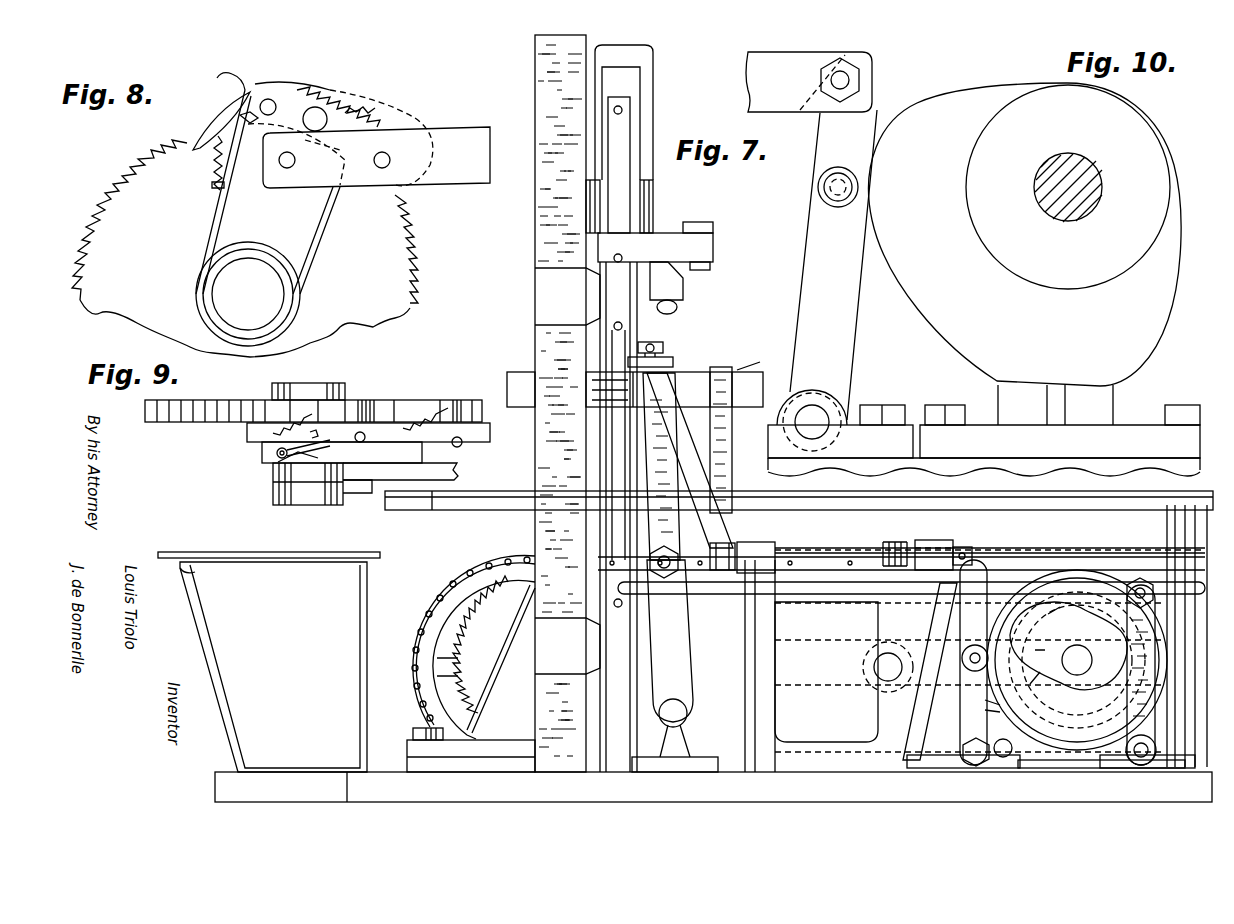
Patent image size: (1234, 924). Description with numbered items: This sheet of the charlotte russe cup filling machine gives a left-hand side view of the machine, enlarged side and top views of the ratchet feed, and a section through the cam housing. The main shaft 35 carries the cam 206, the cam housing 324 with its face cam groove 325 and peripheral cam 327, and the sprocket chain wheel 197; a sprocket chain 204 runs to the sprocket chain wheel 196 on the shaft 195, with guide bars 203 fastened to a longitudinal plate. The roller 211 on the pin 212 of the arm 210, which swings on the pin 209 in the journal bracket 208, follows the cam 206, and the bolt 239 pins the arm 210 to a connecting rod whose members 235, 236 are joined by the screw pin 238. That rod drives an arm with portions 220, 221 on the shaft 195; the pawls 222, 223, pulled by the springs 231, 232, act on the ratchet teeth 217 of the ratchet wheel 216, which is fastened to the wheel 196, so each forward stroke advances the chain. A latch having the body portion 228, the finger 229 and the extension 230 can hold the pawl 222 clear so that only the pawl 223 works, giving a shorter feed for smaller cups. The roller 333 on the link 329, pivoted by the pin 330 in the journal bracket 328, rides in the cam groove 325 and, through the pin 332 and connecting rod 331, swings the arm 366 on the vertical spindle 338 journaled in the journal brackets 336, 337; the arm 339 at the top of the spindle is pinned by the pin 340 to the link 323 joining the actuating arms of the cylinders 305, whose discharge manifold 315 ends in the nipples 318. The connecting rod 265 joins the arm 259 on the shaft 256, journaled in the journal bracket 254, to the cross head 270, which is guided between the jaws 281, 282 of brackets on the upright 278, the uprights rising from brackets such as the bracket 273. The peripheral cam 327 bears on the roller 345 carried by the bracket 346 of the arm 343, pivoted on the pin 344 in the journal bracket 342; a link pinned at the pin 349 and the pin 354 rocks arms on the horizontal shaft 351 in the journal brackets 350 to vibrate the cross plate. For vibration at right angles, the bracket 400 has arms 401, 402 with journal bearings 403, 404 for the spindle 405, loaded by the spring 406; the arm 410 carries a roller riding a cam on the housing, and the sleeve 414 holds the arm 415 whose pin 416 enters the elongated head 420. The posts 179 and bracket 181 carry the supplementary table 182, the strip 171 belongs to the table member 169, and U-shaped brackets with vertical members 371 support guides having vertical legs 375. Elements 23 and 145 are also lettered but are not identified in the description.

In FIG. 7, the carriage 23 is at (880, 610).
In FIG. 10, the main shaft 35 is at (1093, 200).
In FIG. 7, the main shaft 35 is at (1072, 654).
In FIG. 7, the upright 145 is at (1192, 650).
In FIG. 7, the table member 169 is at (432, 508).
In FIG. 7, the strip 171 is at (410, 505).
In FIG. 7, the post 179 is at (1192, 690).
In FIG. 7, the bracket 181 is at (208, 610).
In FIG. 7, the supplementary table 182 is at (256, 556).
In FIG. 8, the shaft 195 is at (248, 294).
In FIG. 9, the shaft 195 is at (325, 500).
In FIG. 7, the sprocket chain wheel 196 is at (480, 590).
In FIG. 7, the sprocket chain wheel 197 is at (1110, 572).
In FIG. 7, the guide bars 203 is at (1003, 760).
In FIG. 7, the sprocket chain 204 is at (472, 562).
In FIG. 10, the cam 206 is at (1025, 234).
In FIG. 7, the journal bracket 208 is at (852, 425).
In FIG. 7, the pin 209 is at (815, 420).
In FIG. 7, the arm 210 is at (848, 332).
In FIG. 7, the roller 211 is at (818, 188).
In FIG. 7, the pin 212 is at (824, 197).
In FIG. 8, the ratchet wheel 216 is at (378, 263).
In FIG. 9, the ratchet wheel 216 is at (192, 424).
In FIG. 7, the ratchet wheel 216 is at (460, 650).
In FIG. 8, the ratchet teeth 217 is at (140, 170).
In FIG. 8, the arm portion 220 is at (205, 232).
In FIG. 9, the arm portion 220 is at (287, 483).
In FIG. 8, the arm portion 221 is at (400, 172).
In FIG. 9, the arm portion 221 is at (472, 441).
In FIG. 8, the pawl 222 is at (215, 107).
In FIG. 9, the pawl 222 is at (340, 410).
In FIG. 8, the pawl 223 is at (395, 150).
In FIG. 9, the pawl 223 is at (415, 400).
In FIG. 8, the latch body portion 228 is at (218, 192).
In FIG. 9, the latch body portion 228 is at (276, 453).
In FIG. 7, the latch body portion 228 is at (501, 659).
In FIG. 8, the projecting finger 229 is at (232, 100).
In FIG. 9, the projecting finger 229 is at (322, 440).
In FIG. 8, the extension 230 is at (237, 68).
In FIG. 9, the extension 230 is at (298, 468).
In FIG. 8, the spring 231 is at (212, 160).
In FIG. 9, the spring 231 is at (270, 435).
In FIG. 8, the spring 232 is at (360, 120).
In FIG. 9, the spring 232 is at (436, 410).
In FIG. 8, the connecting rod member 235 is at (488, 125).
In FIG. 9, the connecting rod member 235 is at (445, 474).
In FIG. 7, the connecting rod member 235 is at (818, 612).
In FIG. 7, the connecting rod member 236 is at (748, 78).
In FIG. 7, the screw pin 238 is at (868, 610).
In FIG. 7, the bolt 239 is at (850, 80).
In FIG. 7, the journal bracket 254 is at (880, 726).
In FIG. 7, the shaft 256 is at (885, 672).
In FIG. 7, the lever arm 259 is at (803, 682).
In FIG. 7, the connecting rod 265 is at (625, 205).
In FIG. 7, the cross head 270 is at (620, 81).
In FIG. 7, the bracket 273 is at (576, 738).
In FIG. 7, the angle shaped upright 278 is at (546, 349).
In FIG. 7, the jaw 281 is at (650, 112).
In FIG. 7, the jaw 282 is at (572, 106).
In FIG. 7, the cylinder 305 is at (586, 212).
In FIG. 7, the discharge manifold 315 is at (684, 284).
In FIG. 7, the nipple 318 is at (678, 310).
In FIG. 7, the link 323 is at (712, 232).
In FIG. 7, the cam housing 324 is at (1088, 740).
In FIG. 7, the cam groove 325 is at (1062, 700).
In FIG. 7, the cam 327 is at (1000, 575).
In FIG. 7, the journal bracket 328 is at (1160, 768).
In FIG. 7, the link 329 is at (1130, 722).
In FIG. 7, the pin 330 is at (1145, 768).
In FIG. 7, the connecting rod 331 is at (1045, 573).
In FIG. 7, the pin 332 is at (1150, 560).
In FIG. 7, the roller 333 is at (1135, 638).
In FIG. 7, the journal bracket 336 is at (567, 646).
In FIG. 7, the journal bracket 337 is at (567, 296).
In FIG. 7, the vertical spindle 338 is at (612, 428).
In FIG. 7, the arm 339 is at (655, 247).
In FIG. 7, the pin 340 is at (698, 222).
In FIG. 7, the journal bracket 342 is at (955, 765).
In FIG. 7, the arm 343 is at (968, 720).
In FIG. 7, the pin 344 is at (972, 766).
In FIG. 7, the roller 345 is at (968, 700).
In FIG. 7, the bracket 346 is at (978, 711).
In FIG. 7, the pin 349 is at (975, 548).
In FIG. 7, the journal brackets 350 is at (695, 757).
In FIG. 7, the horizontal shaft 351 is at (688, 710).
In FIG. 7, the pin 354 is at (670, 548).
In FIG. 7, the arm 366 is at (612, 590).
In FIG. 7, the vertical member 371 is at (732, 483).
In FIG. 7, the vertical leg 375 is at (635, 384).
In FIG. 7, the bracket 400 is at (820, 772).
In FIG. 7, the arm 401 is at (757, 666).
In FIG. 7, the arm 402 is at (920, 671).
In FIG. 7, the journal bearing 403 is at (760, 541).
In FIG. 7, the journal bearing 404 is at (930, 540).
In FIG. 7, the spindle 405 is at (830, 543).
In FIG. 7, the spring 406 is at (890, 541).
In FIG. 7, the arm 410 is at (978, 648).
In FIG. 7, the sleeve 414 is at (723, 556).
In FIG. 7, the arm 415 is at (676, 440).
In FIG. 7, the pin 416 is at (664, 348).
In FIG. 7, the elongated head 420 is at (673, 360).